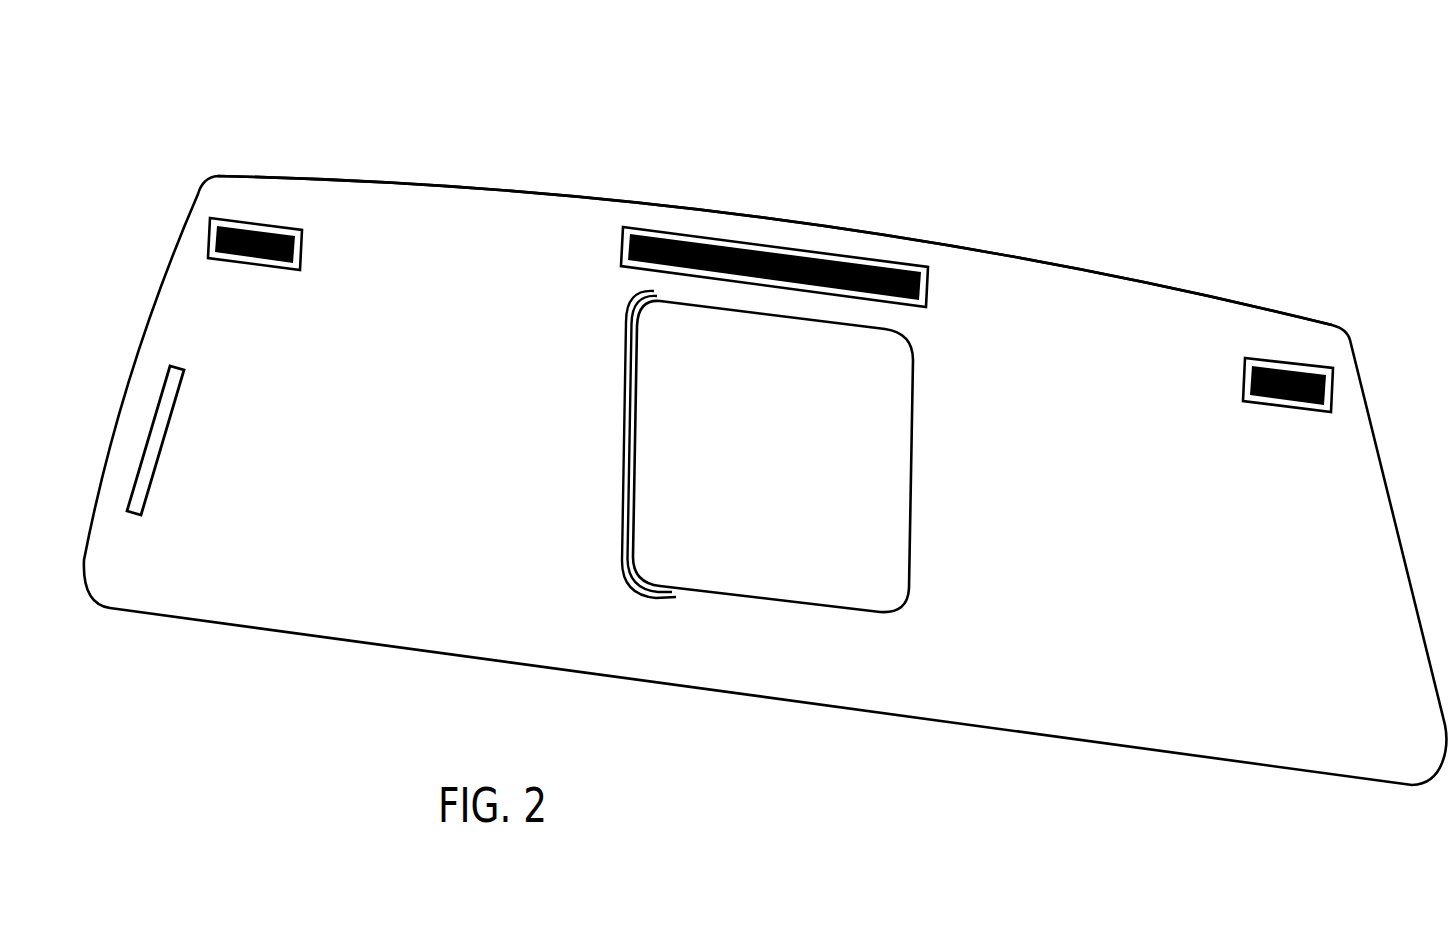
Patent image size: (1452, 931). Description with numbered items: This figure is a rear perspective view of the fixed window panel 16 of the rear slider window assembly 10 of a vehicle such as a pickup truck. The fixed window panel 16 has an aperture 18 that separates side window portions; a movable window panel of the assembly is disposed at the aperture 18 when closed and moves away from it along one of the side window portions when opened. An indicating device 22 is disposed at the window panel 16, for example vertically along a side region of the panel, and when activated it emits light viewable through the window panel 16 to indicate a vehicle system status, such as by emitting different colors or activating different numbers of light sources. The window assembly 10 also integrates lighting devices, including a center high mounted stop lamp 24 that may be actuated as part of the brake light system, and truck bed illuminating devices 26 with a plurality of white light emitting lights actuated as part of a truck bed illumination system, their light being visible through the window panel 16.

The rear slider window assembly 10 is at (614, 160).
The fixed window panel 16 is at (496, 196).
The aperture 18 is at (783, 518).
The indicating device 22 is at (144, 393).
The center high mounted stop lamp 24 is at (746, 232).
The truck bed illuminating device 26 is at (262, 210).